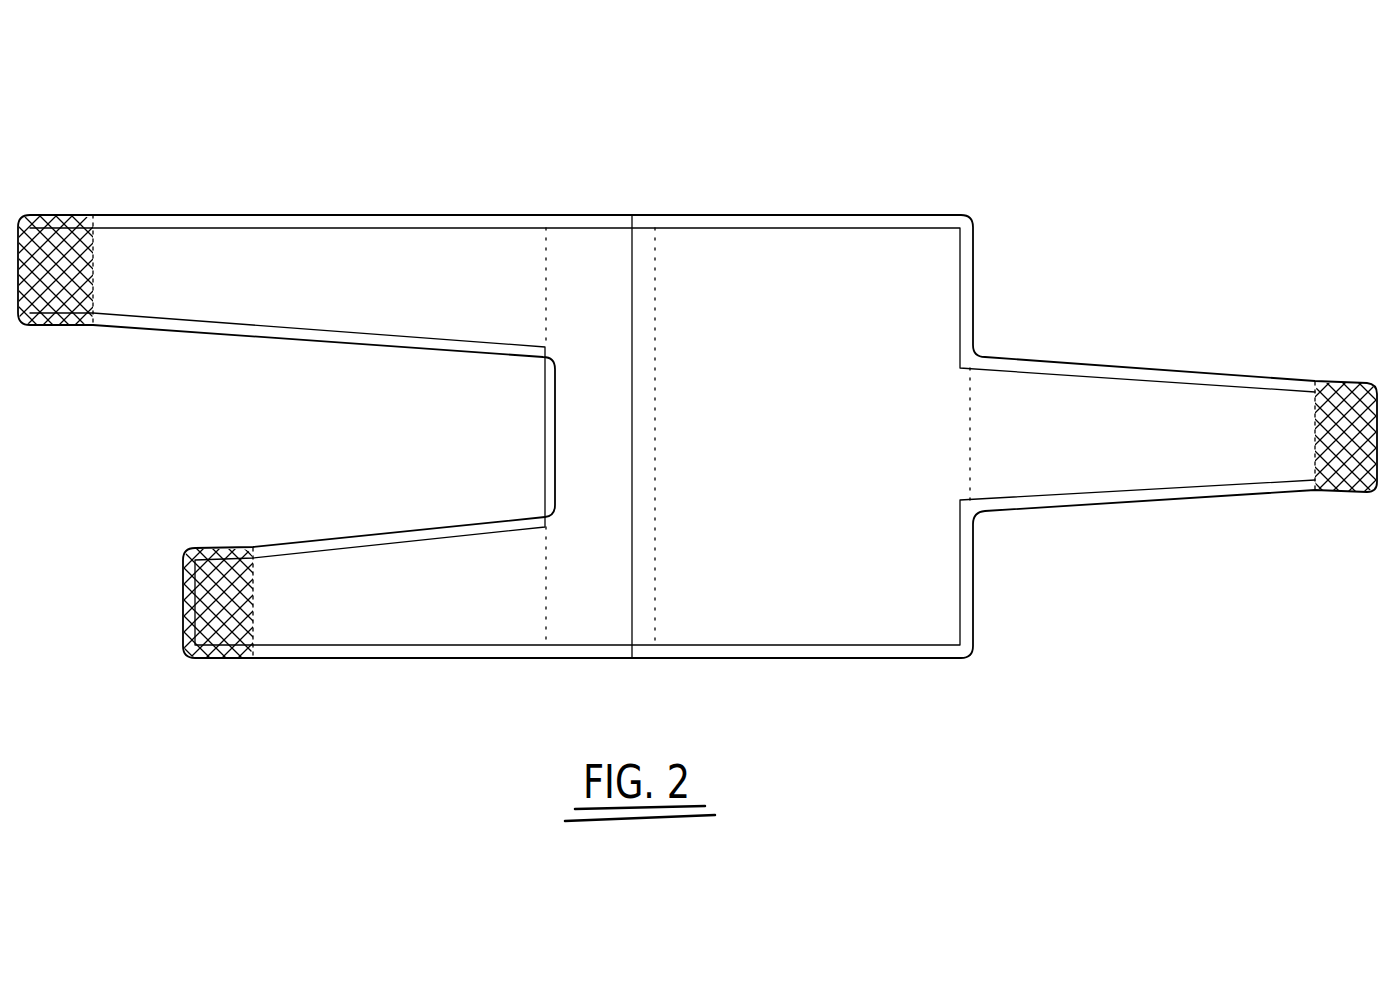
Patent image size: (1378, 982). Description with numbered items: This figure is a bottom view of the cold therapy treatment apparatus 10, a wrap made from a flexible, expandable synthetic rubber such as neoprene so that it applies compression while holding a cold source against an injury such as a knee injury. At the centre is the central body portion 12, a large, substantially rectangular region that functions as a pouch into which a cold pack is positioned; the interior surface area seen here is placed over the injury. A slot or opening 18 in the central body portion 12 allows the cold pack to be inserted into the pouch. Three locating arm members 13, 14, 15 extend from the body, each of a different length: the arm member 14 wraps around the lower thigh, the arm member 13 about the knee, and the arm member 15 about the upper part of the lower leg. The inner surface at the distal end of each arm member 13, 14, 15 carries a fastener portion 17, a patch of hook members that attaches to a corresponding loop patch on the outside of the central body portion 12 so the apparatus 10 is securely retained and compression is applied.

The cold therapy treatment apparatus 10 is at (1052, 214).
The central body portion 12 is at (782, 443).
The arm member 13 is at (1140, 372).
The arm member 14 is at (298, 215).
The arm member 15 is at (325, 541).
The fastener portion 17 is at (65, 230).
The slot or opening 18 is at (632, 275).